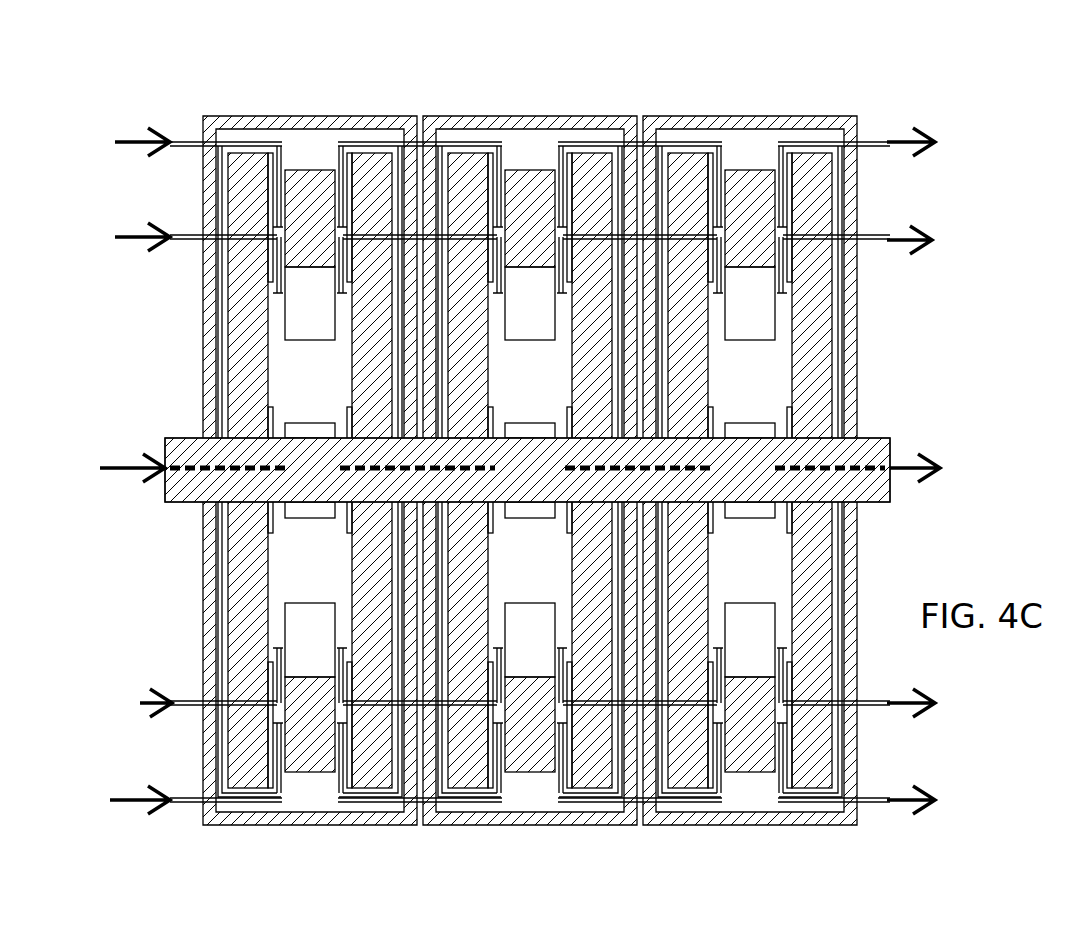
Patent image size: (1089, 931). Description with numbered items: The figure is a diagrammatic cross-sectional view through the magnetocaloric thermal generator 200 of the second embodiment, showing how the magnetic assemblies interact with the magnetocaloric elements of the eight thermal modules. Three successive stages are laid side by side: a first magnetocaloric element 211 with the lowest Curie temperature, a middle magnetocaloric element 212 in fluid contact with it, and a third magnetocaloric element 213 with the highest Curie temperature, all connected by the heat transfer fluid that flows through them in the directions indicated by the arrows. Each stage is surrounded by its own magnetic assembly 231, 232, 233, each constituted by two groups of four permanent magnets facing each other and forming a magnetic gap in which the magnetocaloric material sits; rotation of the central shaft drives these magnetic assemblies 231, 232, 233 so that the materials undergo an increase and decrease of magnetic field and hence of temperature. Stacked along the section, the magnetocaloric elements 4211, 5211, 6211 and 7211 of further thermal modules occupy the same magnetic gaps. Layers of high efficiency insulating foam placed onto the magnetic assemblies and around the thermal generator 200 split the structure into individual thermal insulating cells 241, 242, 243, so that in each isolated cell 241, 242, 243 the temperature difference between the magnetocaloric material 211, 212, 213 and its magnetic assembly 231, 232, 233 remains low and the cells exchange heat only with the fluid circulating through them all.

The thermal generator 200 is at (570, 432).
The magnetocaloric element 211 is at (318, 190).
The magnetocaloric element 212 is at (552, 158).
The magnetocaloric element 213 is at (767, 155).
The magnetic assembly 231 is at (358, 258).
The magnetic assembly 232 is at (556, 414).
The magnetic assembly 233 is at (822, 470).
The thermal insulating cell 241 is at (248, 122).
The thermal insulating cell 242 is at (530, 437).
The thermal insulating cell 243 is at (750, 437).
The magnetocaloric element 4211 is at (295, 735).
The magnetocaloric element 5211 is at (297, 617).
The magnetocaloric element 6211 is at (297, 428).
The magnetocaloric element 7211 is at (295, 318).